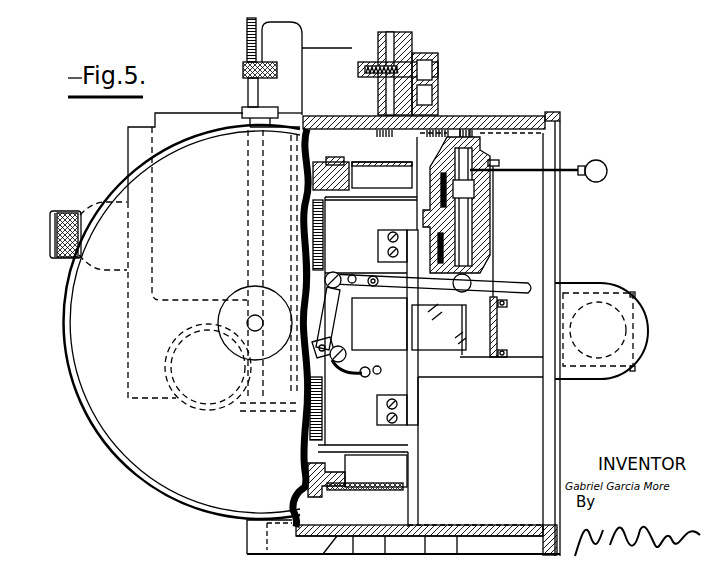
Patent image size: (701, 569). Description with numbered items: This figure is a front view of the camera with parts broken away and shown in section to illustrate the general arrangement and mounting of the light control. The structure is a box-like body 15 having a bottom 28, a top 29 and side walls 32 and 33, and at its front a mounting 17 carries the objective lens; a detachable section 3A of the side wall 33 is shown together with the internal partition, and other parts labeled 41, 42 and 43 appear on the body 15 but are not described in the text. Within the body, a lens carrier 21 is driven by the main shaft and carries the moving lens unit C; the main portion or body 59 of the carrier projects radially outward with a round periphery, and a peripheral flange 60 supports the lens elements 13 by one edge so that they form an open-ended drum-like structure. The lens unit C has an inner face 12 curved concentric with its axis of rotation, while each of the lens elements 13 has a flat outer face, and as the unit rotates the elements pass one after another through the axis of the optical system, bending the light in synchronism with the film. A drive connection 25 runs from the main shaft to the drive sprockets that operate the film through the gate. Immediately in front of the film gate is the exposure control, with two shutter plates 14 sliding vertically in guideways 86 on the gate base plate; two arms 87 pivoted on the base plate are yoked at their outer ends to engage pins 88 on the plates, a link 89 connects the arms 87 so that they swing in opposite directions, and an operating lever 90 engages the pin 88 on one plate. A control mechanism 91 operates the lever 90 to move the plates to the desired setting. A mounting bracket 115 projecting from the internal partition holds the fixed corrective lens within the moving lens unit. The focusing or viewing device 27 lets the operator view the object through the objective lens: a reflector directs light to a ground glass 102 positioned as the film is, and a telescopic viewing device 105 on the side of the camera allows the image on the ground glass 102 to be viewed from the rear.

The disc rim 41 is at (116, 430).
The mounting 17 is at (162, 480).
The side wall 32 is at (128, 165).
The knob 42 is at (66, 377).
The knob 43 is at (243, 75).
The lens carrier 21 is at (320, 158).
The control mechanism 91 is at (460, 113).
The top 29 is at (431, 107).
The drive connection 25 is at (298, 244).
The moving lens unit C is at (366, 161).
The inner face 12 is at (378, 168).
The side wall 33 is at (550, 249).
The shutter plates 14 is at (388, 318).
The pins 88 is at (375, 278).
The arms 87 is at (352, 275).
The operating lever 90 is at (480, 292).
The guideways 86 is at (346, 322).
The link 89 is at (330, 313).
The body of the lens carrier 59 is at (300, 477).
The ground glass 102 is at (498, 327).
The telescopic viewing device 105 is at (646, 333).
The focusing or viewing device 27 is at (448, 350).
The mounting bracket 115 is at (420, 410).
The lower chamber 3A is at (458, 451).
The lens elements 13 is at (408, 490).
The peripheral flange 60 is at (322, 480).
The body 15 is at (247, 540).
The bottom 28 is at (325, 556).